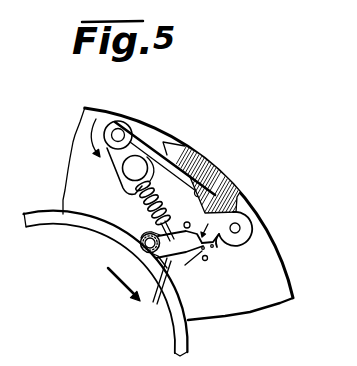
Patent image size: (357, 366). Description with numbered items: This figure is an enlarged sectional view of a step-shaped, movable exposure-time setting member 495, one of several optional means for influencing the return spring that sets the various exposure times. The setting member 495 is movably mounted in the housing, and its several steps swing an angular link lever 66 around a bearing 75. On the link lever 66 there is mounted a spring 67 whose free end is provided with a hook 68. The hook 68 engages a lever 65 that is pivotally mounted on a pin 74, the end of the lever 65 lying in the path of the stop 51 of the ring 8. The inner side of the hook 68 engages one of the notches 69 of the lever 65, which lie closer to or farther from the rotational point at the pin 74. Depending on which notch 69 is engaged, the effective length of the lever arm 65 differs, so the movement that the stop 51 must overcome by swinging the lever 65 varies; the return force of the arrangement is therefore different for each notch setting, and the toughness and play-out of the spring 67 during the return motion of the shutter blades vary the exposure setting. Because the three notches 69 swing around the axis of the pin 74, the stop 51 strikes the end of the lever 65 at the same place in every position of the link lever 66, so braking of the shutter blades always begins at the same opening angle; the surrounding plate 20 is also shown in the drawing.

The wheel rim 8 is at (187, 342).
The sector plate 20 is at (283, 268).
The pivot pin 51 is at (140, 244).
The spring clip 65 is at (219, 249).
The link arm 66 is at (167, 142).
The roller 67 is at (133, 193).
The pawl 68 is at (197, 266).
The connecting rod 69 is at (154, 291).
The roller 74 is at (240, 227).
The lever pivot 75 is at (131, 122).
The stop block 495 is at (223, 180).